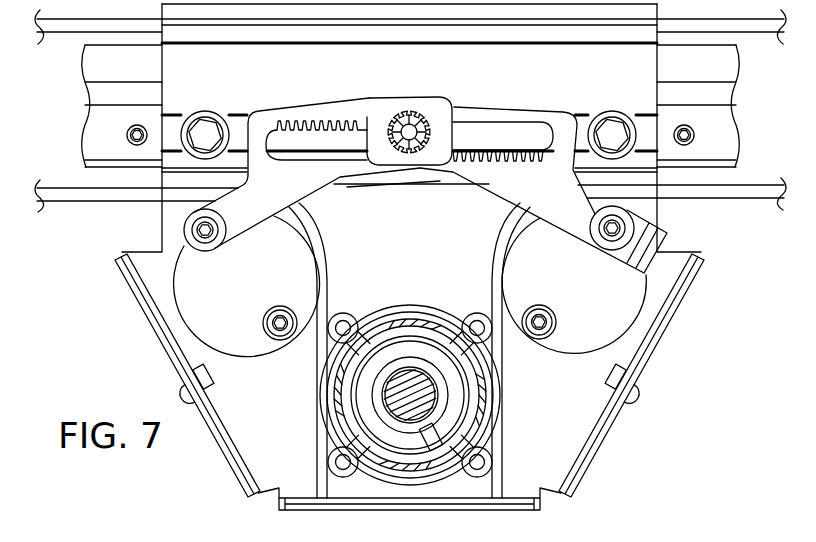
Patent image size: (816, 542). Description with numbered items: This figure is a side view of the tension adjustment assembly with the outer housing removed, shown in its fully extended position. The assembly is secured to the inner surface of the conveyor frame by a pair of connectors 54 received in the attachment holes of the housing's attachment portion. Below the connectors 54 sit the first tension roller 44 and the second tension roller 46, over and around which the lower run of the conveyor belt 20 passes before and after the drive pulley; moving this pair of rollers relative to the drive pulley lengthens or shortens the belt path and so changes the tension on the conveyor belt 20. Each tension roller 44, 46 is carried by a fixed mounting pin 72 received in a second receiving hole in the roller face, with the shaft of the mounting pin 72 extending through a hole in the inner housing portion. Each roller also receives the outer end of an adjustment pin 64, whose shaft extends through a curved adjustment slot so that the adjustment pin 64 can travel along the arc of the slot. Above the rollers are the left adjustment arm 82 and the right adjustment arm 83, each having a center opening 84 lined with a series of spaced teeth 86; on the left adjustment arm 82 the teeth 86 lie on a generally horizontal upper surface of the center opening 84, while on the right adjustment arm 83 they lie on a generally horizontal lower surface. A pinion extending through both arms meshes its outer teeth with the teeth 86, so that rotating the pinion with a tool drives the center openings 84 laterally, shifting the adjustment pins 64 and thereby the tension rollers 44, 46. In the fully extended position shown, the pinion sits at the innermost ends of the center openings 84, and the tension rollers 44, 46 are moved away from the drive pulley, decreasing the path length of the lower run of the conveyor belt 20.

The conveyor belt 20 is at (322, 300).
The first tension roller 44 is at (243, 334).
The second tension roller 46 is at (572, 334).
The connector 54 is at (206, 128).
The adjustment pin 64 is at (187, 234).
The fixed mounting pin 72 is at (264, 322).
The left adjustment arm 82 is at (270, 113).
The right adjustment arm 83 is at (538, 112).
The center opening 84 is at (333, 136).
The series of spaced teeth 86 is at (372, 118).